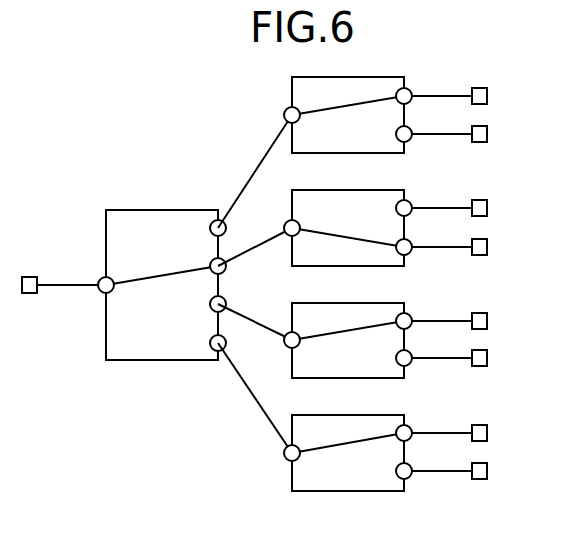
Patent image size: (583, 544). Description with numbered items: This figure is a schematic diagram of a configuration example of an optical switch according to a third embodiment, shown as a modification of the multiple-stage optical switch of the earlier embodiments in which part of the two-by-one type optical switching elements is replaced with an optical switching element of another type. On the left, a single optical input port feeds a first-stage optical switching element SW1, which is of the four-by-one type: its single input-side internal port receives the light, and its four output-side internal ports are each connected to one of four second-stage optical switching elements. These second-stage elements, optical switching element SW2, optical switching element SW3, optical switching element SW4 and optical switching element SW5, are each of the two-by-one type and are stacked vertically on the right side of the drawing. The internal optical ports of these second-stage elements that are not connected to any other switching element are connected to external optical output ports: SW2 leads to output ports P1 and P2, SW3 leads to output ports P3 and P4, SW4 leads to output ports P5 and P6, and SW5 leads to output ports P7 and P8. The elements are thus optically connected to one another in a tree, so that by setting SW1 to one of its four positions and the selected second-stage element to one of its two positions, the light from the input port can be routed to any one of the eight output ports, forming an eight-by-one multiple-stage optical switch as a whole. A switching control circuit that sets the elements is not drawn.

The optical switching element SW1 is at (162, 300).
The optical switching element SW2 is at (348, 129).
The optical switching element SW3 is at (348, 242).
The optical switching element SW4 is at (348, 355).
The optical switching element SW5 is at (348, 466).
The optical output port P1 is at (476, 98).
The optical output port P2 is at (476, 136).
The optical output port P3 is at (476, 210).
The optical output port P4 is at (476, 249).
The optical output port P5 is at (476, 323).
The optical output port P6 is at (476, 360).
The optical output port P7 is at (476, 435).
The optical output port P8 is at (476, 473).